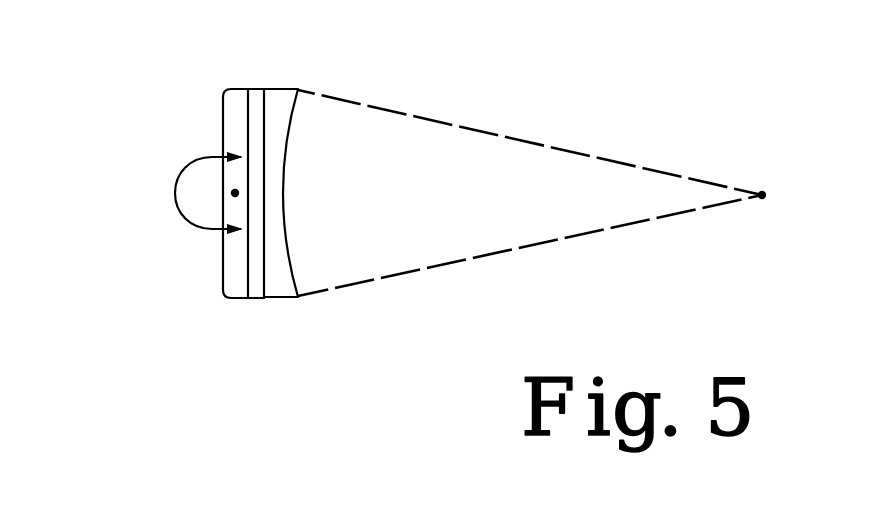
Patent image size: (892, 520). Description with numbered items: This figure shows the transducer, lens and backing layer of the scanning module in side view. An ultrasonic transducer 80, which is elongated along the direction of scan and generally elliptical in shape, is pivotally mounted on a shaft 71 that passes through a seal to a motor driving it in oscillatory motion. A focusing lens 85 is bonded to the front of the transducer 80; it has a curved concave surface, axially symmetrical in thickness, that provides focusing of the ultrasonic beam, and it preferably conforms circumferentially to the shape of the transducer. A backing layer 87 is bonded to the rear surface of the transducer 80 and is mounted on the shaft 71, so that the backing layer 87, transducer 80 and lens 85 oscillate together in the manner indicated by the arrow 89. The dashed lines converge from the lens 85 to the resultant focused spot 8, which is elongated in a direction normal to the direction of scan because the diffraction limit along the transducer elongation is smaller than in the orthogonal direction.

The backing layer 87 is at (241, 88).
The ultrasonic transducer 80 is at (255, 88).
The focusing lens 85 is at (283, 88).
The scanning spot 8 is at (763, 192).
The shaft 71 is at (231, 193).
The arrow 89 is at (172, 189).